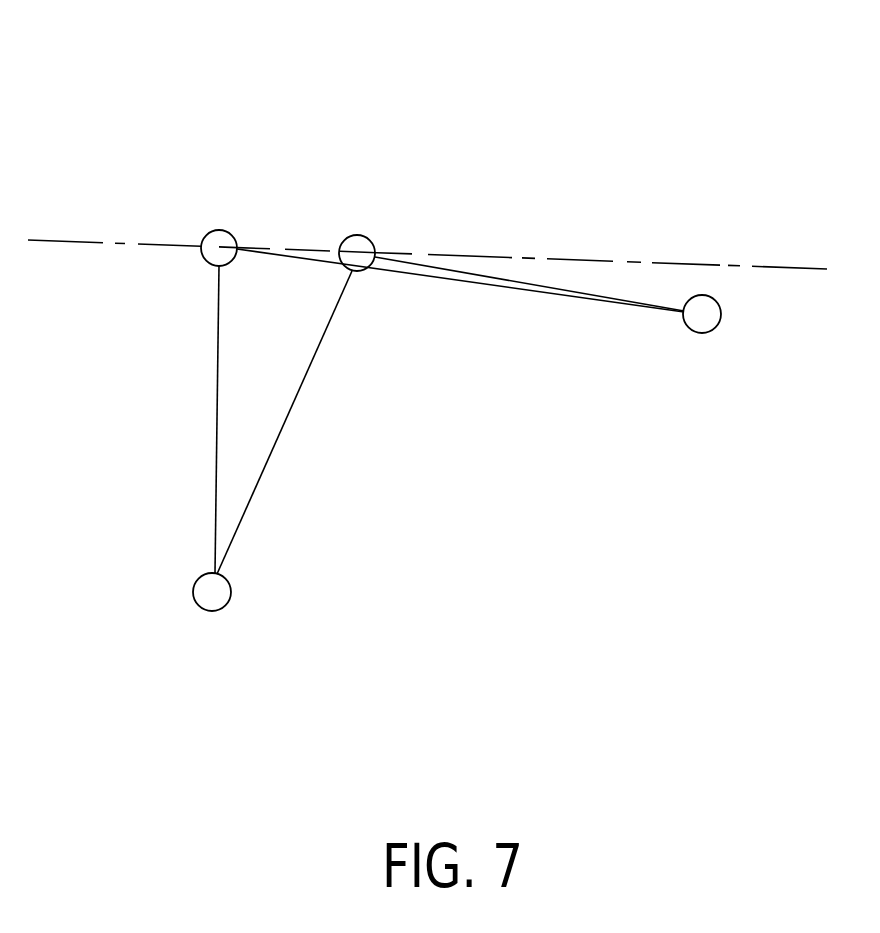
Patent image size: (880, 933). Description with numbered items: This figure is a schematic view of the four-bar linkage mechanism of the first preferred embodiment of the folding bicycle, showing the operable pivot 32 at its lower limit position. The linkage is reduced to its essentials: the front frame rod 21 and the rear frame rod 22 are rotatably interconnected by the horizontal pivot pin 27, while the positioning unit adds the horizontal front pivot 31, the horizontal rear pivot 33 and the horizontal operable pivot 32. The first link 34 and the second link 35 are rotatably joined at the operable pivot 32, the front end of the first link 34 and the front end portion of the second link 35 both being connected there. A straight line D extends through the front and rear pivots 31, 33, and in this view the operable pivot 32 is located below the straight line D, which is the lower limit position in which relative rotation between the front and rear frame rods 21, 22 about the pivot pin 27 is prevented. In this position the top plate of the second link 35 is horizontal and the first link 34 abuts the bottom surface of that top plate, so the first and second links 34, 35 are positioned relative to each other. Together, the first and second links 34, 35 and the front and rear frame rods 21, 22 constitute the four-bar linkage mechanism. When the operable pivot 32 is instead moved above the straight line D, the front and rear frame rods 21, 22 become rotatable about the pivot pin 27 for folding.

The front frame rod 21 is at (292, 403).
The rear frame rod 22 is at (215, 357).
The horizontal pivot pin 27 is at (215, 592).
The horizontal front pivot 31 is at (356, 253).
The horizontal operable pivot 32 is at (702, 314).
The horizontal rear pivot 33 is at (231, 247).
The first link 34 is at (455, 271).
The second link 35 is at (485, 284).
The straight line D is at (641, 262).